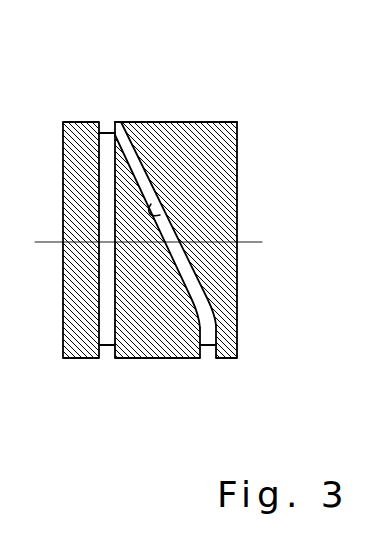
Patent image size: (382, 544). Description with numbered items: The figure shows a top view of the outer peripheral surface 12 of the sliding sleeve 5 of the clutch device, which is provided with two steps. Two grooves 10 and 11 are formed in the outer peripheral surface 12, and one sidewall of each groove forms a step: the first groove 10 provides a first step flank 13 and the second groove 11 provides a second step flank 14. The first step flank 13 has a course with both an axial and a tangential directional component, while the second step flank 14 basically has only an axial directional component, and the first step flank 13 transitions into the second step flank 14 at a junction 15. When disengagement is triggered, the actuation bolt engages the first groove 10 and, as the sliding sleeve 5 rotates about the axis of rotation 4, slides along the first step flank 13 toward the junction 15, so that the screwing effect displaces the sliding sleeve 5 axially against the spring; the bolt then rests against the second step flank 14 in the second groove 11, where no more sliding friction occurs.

The axis of rotation 4 is at (247, 243).
The sliding sleeve 5 is at (176, 116).
The first groove 10 is at (148, 200).
The second groove 11 is at (105, 348).
The outer peripheral surface 12 is at (212, 122).
The first step flank 13 is at (163, 215).
The second step flank 14 is at (138, 358).
The junction 15 is at (113, 121).